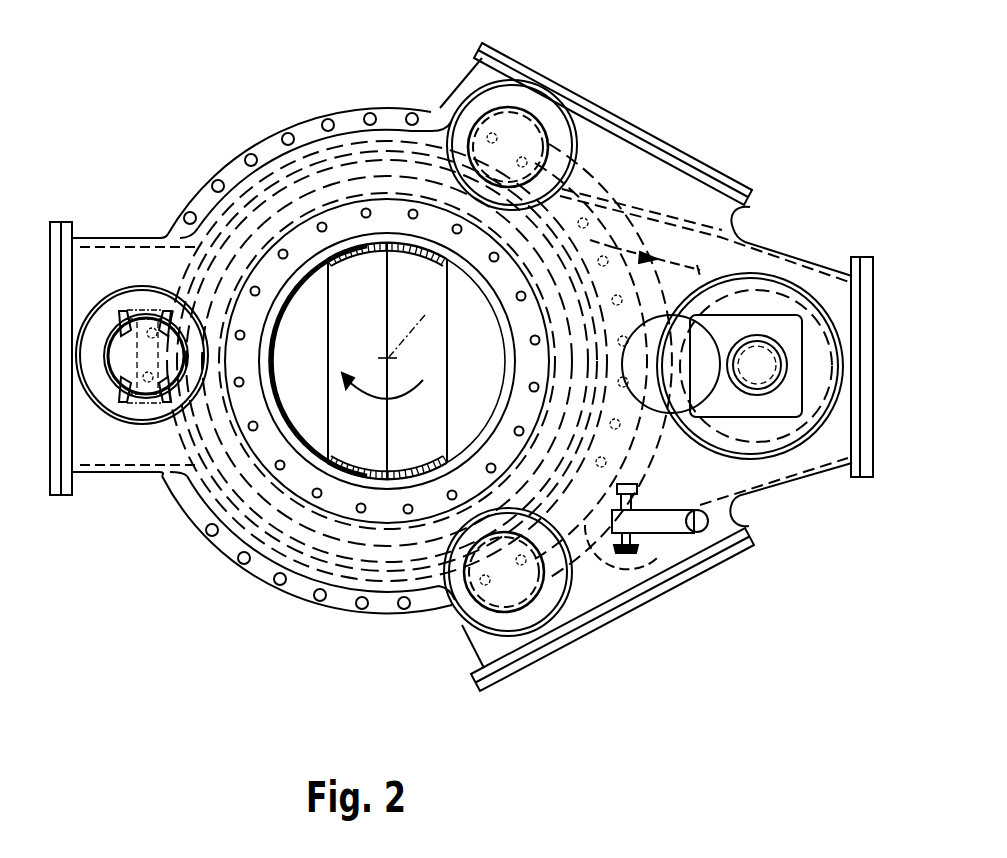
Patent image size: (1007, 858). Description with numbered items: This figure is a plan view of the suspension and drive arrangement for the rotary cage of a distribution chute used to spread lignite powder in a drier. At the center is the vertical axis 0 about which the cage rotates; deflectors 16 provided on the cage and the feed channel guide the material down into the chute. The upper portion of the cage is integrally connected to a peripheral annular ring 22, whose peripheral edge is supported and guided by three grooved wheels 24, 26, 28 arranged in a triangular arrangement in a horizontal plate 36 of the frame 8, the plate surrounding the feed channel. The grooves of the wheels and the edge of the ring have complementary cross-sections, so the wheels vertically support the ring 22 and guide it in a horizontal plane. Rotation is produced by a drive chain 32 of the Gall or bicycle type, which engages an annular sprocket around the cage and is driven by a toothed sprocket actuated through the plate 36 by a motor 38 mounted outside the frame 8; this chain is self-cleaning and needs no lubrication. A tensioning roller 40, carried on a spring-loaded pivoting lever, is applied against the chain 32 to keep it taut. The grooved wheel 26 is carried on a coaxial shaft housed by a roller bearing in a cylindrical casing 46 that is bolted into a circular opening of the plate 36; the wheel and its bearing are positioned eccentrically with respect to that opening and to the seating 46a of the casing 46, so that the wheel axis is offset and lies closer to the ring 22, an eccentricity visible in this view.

The frame 8 is at (294, 110).
The deflectors 16 is at (398, 302).
The peripheral annular ring 22 is at (327, 466).
The vertical axis 0 is at (390, 350).
The grooved wheel 24 is at (124, 426).
The grooved wheel 26 is at (578, 146).
The grooved wheel 28 is at (460, 634).
The drive chain 32 is at (690, 270).
The horizontal plate 36 is at (227, 473).
The motor 38 is at (707, 343).
The tensioning roller 40 is at (640, 550).
The cylindrical casing 46 is at (478, 96).
The seating of the casing 46a is at (522, 98).